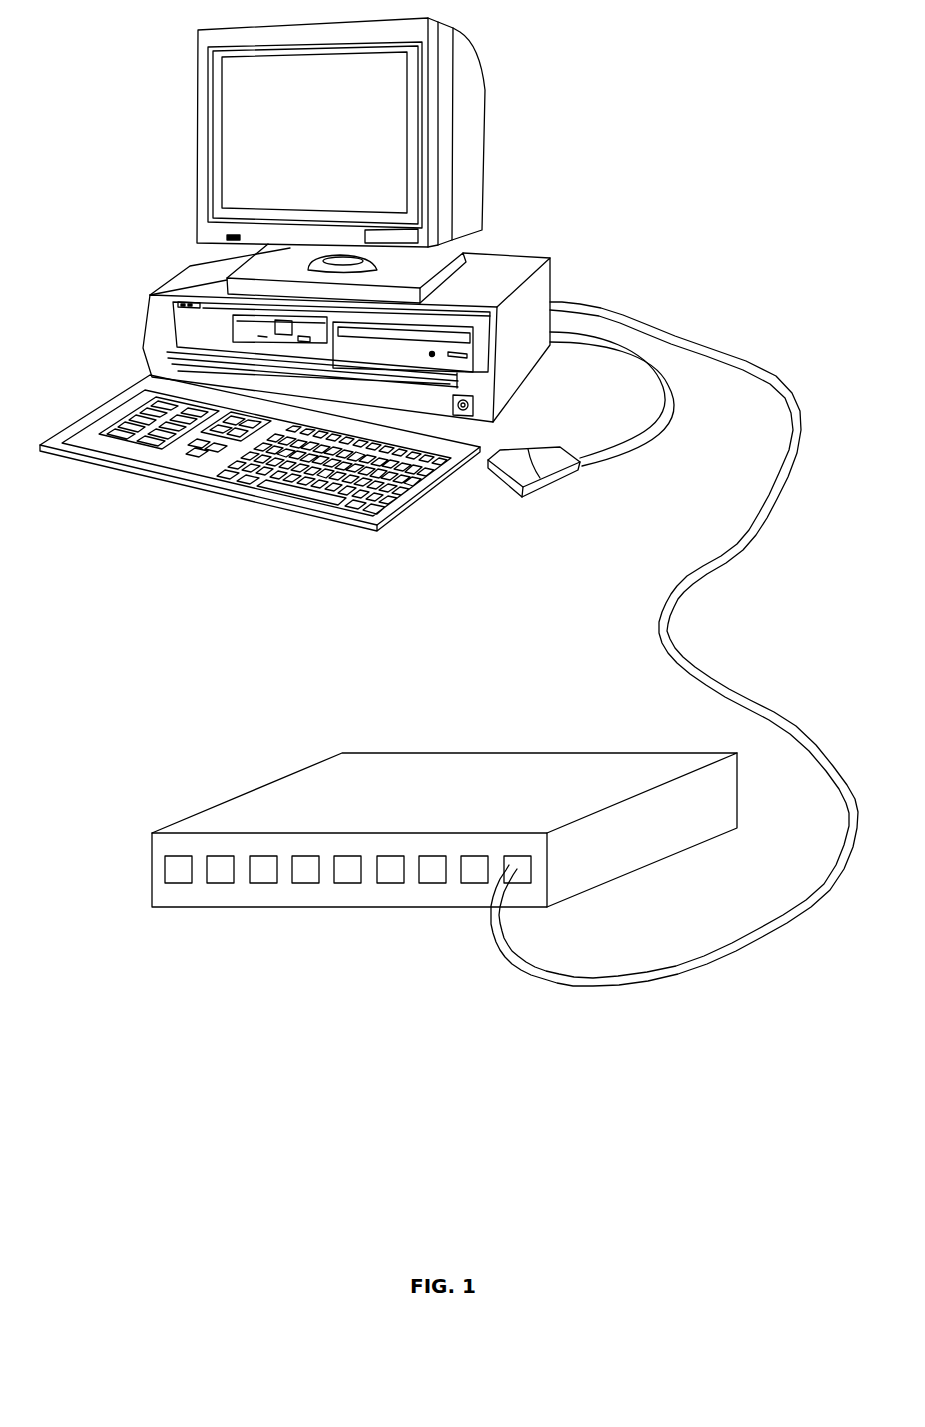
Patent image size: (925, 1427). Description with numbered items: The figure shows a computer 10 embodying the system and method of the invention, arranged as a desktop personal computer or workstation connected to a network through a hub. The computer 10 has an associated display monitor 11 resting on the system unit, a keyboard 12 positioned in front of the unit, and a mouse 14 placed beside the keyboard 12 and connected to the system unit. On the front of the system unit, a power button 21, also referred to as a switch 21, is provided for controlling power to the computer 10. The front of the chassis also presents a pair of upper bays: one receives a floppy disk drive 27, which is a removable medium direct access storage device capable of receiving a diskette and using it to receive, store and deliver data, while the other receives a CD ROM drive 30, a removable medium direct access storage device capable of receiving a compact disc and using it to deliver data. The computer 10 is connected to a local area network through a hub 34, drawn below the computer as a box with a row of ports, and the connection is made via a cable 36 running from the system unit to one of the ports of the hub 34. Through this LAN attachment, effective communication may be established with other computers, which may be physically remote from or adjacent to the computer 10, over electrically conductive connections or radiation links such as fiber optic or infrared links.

The computer 10 is at (153, 222).
The display monitor 11 is at (198, 72).
The keyboard 12 is at (92, 467).
The mouse 14 is at (547, 487).
The power button 21 is at (500, 416).
The floppy disk drive 27 is at (243, 330).
The CD ROM drive 30 is at (467, 350).
The hub 34 is at (196, 716).
The cable 36 is at (748, 532).